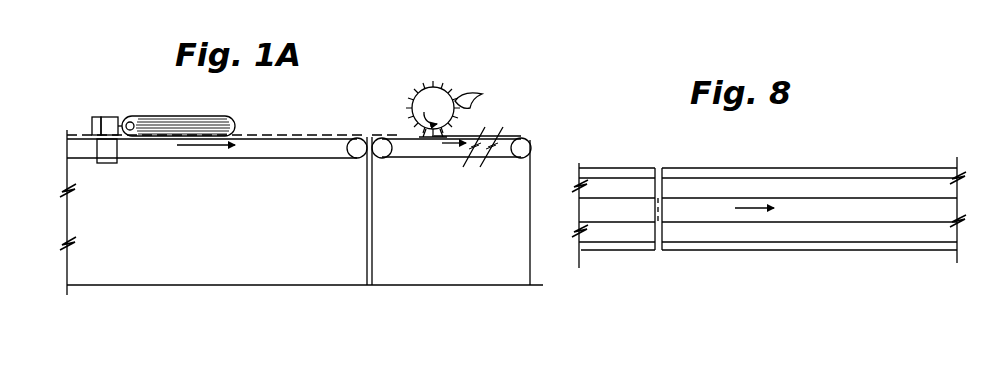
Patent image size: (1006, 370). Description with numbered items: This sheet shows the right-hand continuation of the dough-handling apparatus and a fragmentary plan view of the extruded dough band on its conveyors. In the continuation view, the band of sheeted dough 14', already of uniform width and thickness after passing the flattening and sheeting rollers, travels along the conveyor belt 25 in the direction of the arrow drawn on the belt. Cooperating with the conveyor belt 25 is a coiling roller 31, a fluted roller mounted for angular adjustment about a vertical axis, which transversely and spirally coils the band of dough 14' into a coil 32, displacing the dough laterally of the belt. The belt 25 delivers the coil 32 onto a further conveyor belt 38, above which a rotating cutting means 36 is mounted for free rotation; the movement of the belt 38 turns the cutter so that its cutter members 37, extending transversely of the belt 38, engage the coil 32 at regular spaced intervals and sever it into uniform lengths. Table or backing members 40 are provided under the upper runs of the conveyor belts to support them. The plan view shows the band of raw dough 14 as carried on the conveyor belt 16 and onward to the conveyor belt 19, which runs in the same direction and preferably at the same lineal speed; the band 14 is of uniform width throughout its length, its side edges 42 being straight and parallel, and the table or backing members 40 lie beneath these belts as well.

In FIG. 8, the band of raw dough 14 is at (768, 197).
In FIG. 1A, the band of sheeted dough 14' is at (96, 120).
In FIG. 8, the conveyor belt 16 is at (603, 183).
In FIG. 8, the conveyor belt 19 is at (840, 188).
In FIG. 1A, the conveyor belt 25 is at (268, 140).
In FIG. 1A, the coiling roller 31 is at (175, 117).
In FIG. 1A, the coil of dough 32 is at (290, 136).
In FIG. 1A, the rotating cutting means 36 is at (433, 95).
In FIG. 1A, the cutter members 37 is at (482, 94).
In FIG. 1A, the conveyor belt 38 is at (402, 140).
In FIG. 8, the table or backing members 40 is at (757, 172).
In FIG. 8, the side edges 42 is at (595, 192).